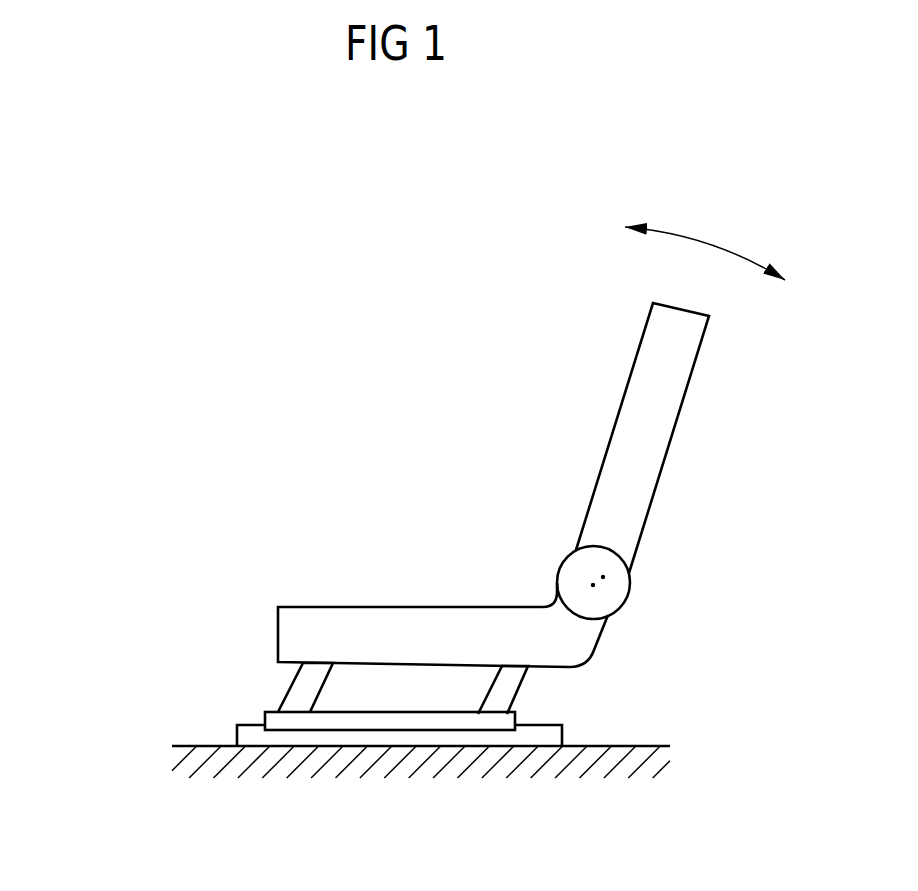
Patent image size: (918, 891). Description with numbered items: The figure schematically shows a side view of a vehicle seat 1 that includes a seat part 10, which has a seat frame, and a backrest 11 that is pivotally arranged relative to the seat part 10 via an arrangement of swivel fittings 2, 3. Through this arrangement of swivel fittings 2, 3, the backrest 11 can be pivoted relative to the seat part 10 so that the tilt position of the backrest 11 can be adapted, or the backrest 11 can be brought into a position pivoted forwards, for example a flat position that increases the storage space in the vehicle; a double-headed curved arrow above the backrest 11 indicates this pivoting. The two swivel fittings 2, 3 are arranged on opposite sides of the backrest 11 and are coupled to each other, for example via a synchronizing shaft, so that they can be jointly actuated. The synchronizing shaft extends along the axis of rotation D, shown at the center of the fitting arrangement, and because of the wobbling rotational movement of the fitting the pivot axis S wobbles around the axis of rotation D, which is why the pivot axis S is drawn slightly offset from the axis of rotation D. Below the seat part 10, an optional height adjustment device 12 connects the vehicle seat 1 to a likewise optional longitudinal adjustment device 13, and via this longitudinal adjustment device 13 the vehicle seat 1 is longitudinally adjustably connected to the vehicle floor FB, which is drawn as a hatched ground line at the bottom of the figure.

The vehicle seat 1 is at (515, 418).
The swivel fitting 2 is at (632, 605).
The swivel fitting 3 is at (589, 641).
The seat part 10 is at (388, 628).
The backrest 11 is at (663, 427).
The height adjustment device 12 is at (272, 683).
The longitudinal adjustment device 13 is at (230, 727).
The axis of rotation D is at (592, 584).
The pivot axis S is at (604, 577).
The vehicle floor FB is at (650, 746).